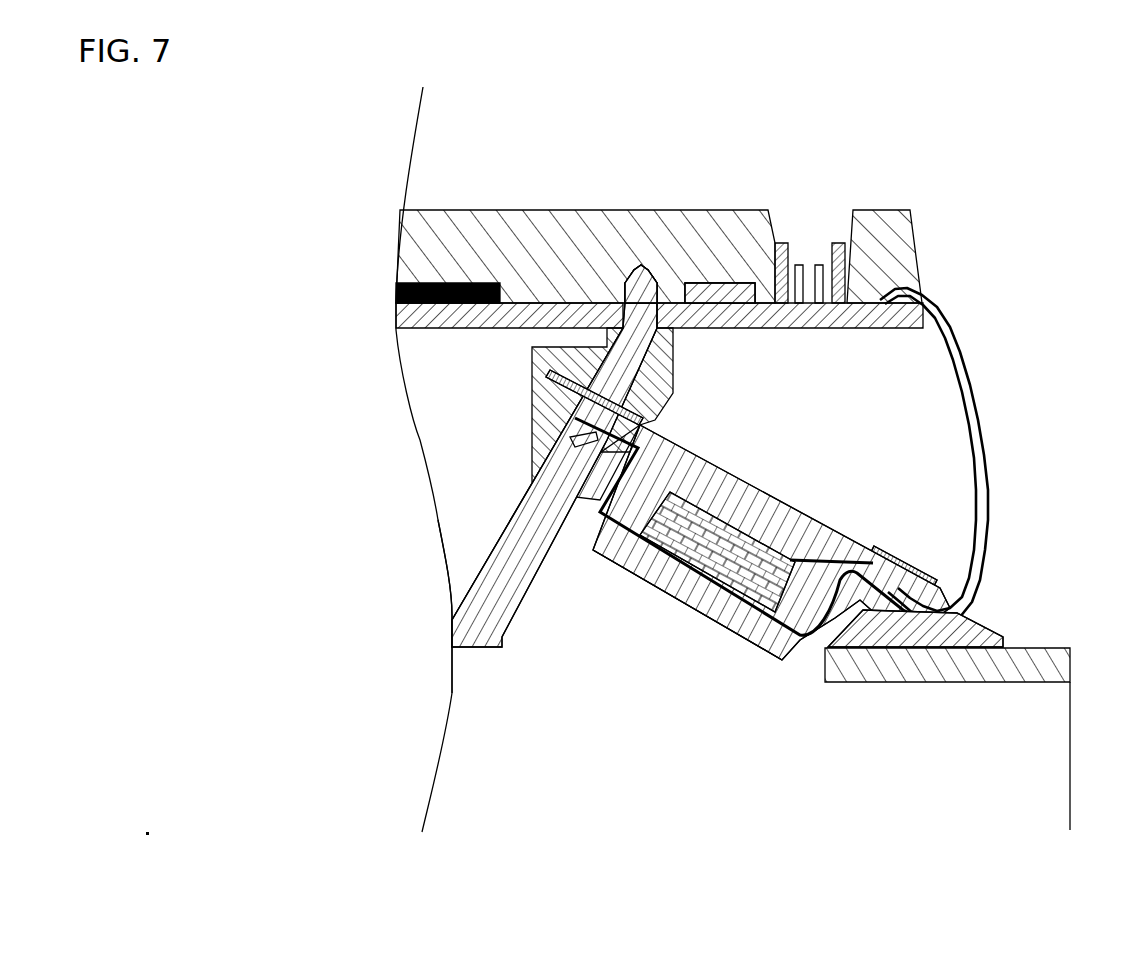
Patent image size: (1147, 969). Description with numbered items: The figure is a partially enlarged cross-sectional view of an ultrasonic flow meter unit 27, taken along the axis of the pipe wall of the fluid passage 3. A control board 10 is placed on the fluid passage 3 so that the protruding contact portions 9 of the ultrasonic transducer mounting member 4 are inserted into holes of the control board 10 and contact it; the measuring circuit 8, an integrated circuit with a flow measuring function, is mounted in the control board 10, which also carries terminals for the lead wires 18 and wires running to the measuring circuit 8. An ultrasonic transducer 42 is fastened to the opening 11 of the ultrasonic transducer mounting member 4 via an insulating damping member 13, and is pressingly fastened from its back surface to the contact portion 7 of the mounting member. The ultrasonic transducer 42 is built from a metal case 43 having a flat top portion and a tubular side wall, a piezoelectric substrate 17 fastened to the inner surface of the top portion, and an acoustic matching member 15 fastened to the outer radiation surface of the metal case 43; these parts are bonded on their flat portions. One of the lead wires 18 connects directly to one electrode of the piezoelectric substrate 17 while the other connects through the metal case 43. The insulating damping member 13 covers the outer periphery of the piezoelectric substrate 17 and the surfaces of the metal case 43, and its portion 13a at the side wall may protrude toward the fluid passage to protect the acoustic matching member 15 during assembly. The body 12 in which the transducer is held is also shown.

The fluid passage 3 is at (1070, 677).
The ultrasonic transducer mounting member 4 is at (575, 482).
The contact portion 7 is at (830, 670).
The measuring circuit 8 is at (500, 283).
The contact portion 9 is at (640, 300).
The control board 10 is at (563, 312).
The opening 11 is at (663, 640).
The holder 12 is at (560, 380).
The insulating damping member 13 is at (883, 265).
The protruded portion 13a is at (598, 500).
The acoustic matching member 15 is at (755, 642).
The piezoelectric substrate 17 is at (765, 548).
The lead wires 18 is at (967, 581).
The ultrasonic flow meter unit 27 is at (843, 177).
The ultrasonic transducer 42 is at (768, 496).
The metal case 43 is at (575, 418).